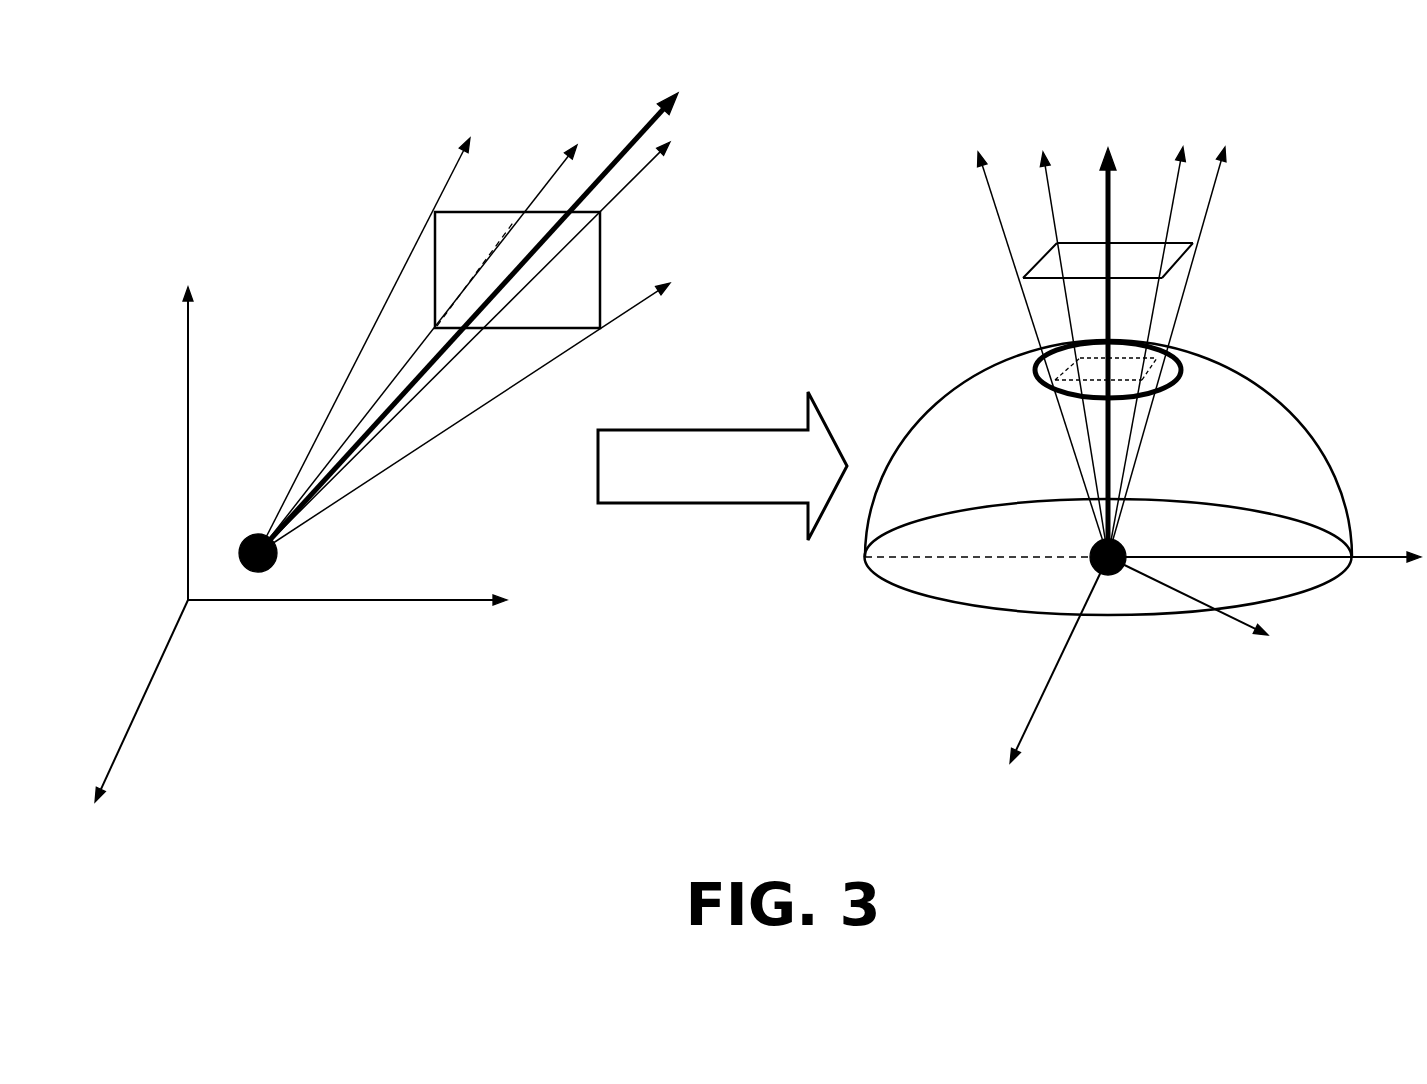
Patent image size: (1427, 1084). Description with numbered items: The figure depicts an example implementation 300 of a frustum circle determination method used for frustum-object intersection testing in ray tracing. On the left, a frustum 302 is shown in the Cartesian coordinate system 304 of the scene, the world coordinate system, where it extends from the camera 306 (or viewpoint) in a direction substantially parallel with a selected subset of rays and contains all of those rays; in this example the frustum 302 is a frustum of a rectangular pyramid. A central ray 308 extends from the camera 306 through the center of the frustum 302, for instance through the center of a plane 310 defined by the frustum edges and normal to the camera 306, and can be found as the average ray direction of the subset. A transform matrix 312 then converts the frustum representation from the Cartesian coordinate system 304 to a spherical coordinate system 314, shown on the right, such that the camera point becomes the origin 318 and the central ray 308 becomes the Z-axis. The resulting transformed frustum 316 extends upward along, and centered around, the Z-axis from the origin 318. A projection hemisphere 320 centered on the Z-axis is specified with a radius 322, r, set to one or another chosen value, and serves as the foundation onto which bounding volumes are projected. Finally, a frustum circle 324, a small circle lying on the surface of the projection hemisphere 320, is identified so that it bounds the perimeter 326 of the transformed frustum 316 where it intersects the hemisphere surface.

The example implementation 300 is at (843, 109).
The frustum 302 is at (530, 393).
The Cartesian coordinate system 304 is at (192, 655).
The camera 306 is at (277, 559).
The central ray 308 is at (604, 166).
The plane 310 is at (601, 251).
The transform matrix 312 is at (716, 429).
The spherical coordinate system 314 is at (1246, 665).
The transformed frustum 316 is at (1208, 285).
The origin 318 is at (1128, 552).
The projection hemisphere 320 is at (1298, 413).
The radius 322 is at (1034, 555).
The frustum circle 324 is at (1177, 383).
The perimeter 326 is at (1096, 360).